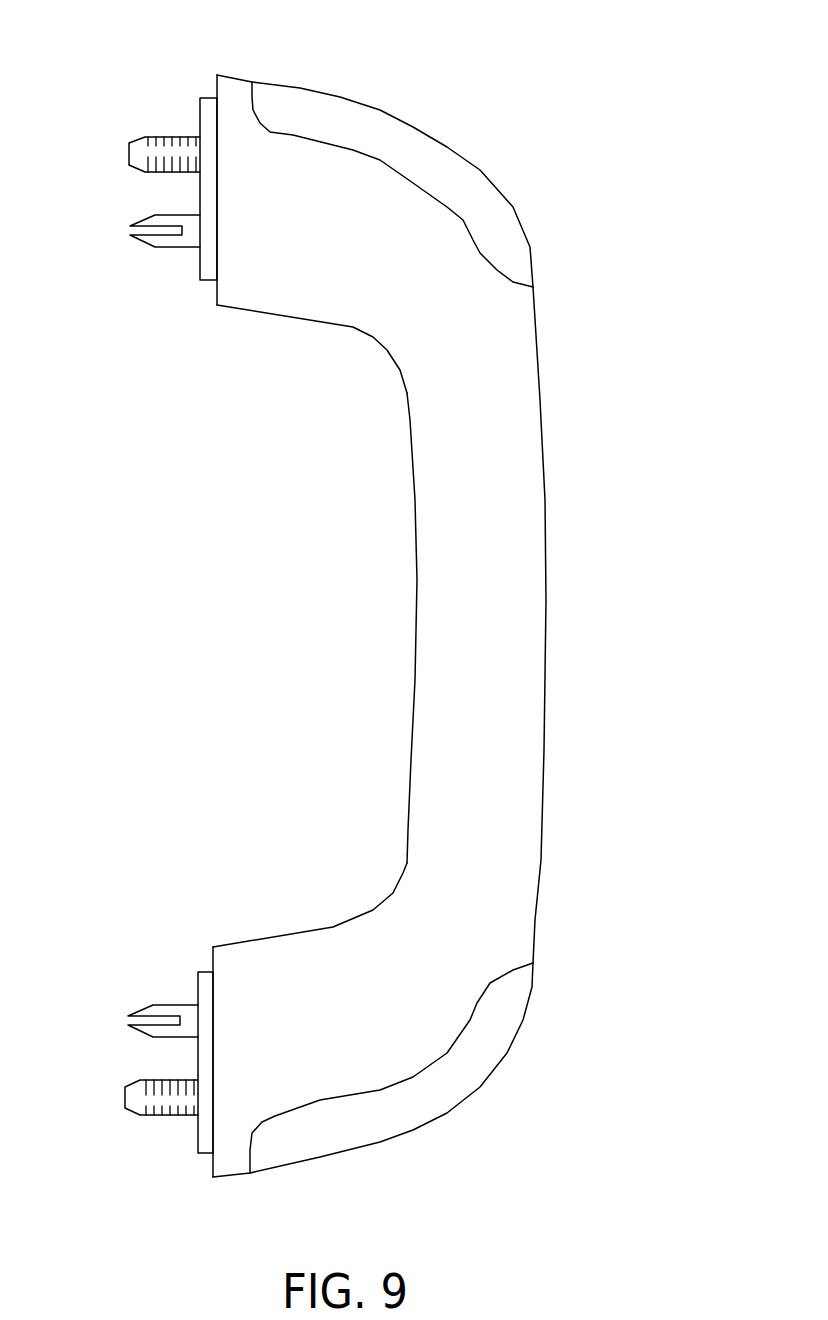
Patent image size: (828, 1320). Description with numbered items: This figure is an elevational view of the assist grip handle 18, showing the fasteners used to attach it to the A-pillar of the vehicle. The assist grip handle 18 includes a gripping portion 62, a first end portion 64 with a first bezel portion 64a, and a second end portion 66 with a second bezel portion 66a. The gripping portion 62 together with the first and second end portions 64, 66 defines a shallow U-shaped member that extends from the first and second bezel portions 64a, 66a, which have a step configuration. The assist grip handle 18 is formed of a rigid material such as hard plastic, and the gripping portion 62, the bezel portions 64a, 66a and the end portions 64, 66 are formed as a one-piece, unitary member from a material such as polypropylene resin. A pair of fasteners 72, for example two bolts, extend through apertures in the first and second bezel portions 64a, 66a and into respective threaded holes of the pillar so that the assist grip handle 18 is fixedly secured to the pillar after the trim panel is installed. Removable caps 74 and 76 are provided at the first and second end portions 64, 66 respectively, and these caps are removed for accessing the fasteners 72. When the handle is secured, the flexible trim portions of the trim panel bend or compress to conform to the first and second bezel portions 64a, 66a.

The assist grip handle 18 is at (386, 596).
The gripping portion 62 is at (492, 737).
The first end portion 64 is at (295, 272).
The first bezel portion 64a is at (216, 84).
The second end portion 66 is at (290, 970).
The second bezel portion 66a is at (210, 958).
The fasteners 72 is at (163, 135).
The removable cap 74 is at (392, 140).
The removable cap 76 is at (422, 1100).